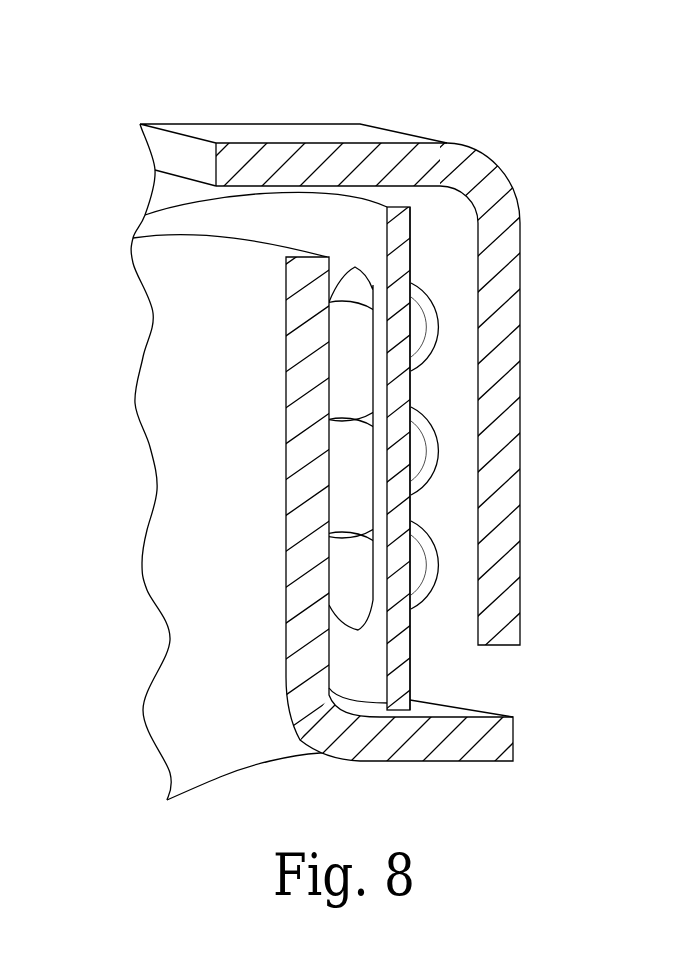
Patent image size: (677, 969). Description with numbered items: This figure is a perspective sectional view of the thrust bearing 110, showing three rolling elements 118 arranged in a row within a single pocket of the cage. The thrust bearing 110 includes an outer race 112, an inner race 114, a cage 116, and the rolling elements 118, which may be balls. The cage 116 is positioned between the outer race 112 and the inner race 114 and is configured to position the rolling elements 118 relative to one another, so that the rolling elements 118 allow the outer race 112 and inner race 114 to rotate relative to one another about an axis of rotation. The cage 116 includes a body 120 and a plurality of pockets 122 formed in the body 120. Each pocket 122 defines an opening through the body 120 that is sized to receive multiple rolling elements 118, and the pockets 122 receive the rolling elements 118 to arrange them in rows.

The thrust bearing 110 is at (549, 133).
The outer race 112 is at (514, 307).
The inner race 114 is at (186, 557).
The cage 116 is at (381, 206).
The rolling elements 118 is at (445, 343).
The body 120 is at (403, 228).
The pockets 122 is at (352, 507).